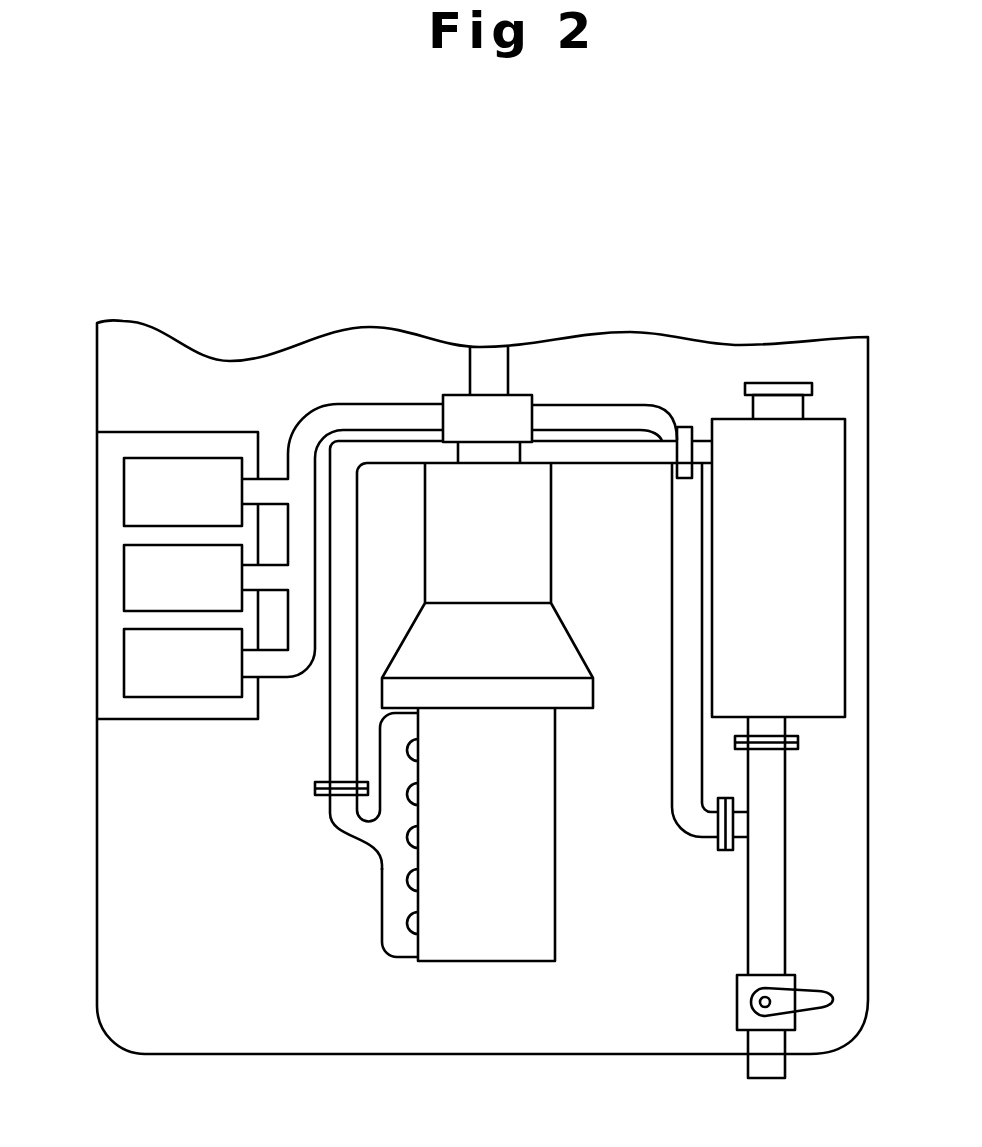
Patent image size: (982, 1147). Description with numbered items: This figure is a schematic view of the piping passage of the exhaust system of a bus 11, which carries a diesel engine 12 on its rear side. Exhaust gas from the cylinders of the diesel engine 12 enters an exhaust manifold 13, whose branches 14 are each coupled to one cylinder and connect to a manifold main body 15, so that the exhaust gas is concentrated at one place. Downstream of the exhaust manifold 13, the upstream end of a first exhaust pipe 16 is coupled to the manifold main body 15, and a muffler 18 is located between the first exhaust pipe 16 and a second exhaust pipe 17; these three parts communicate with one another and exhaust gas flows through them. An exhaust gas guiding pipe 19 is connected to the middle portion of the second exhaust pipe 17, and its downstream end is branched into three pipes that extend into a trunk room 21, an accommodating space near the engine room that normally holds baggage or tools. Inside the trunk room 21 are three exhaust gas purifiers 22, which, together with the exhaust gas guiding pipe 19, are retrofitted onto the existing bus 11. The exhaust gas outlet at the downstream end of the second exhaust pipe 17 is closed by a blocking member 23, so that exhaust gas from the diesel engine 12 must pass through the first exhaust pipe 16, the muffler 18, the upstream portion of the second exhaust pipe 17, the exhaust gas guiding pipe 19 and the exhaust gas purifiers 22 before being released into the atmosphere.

The bus 11 is at (569, 334).
The diesel engine 12 is at (547, 820).
The exhaust manifold 13 is at (386, 926).
The branch 14 is at (417, 882).
The manifold main body 15 is at (390, 872).
The first exhaust pipe 16 is at (357, 518).
The second exhaust pipe 17 is at (787, 868).
The muffler 18 is at (826, 718).
The exhaust gas guiding pipe 19 is at (389, 404).
The trunk room 21 is at (170, 722).
The exhaust gas purifier 22 is at (134, 492).
The blocking member 23 is at (795, 1018).